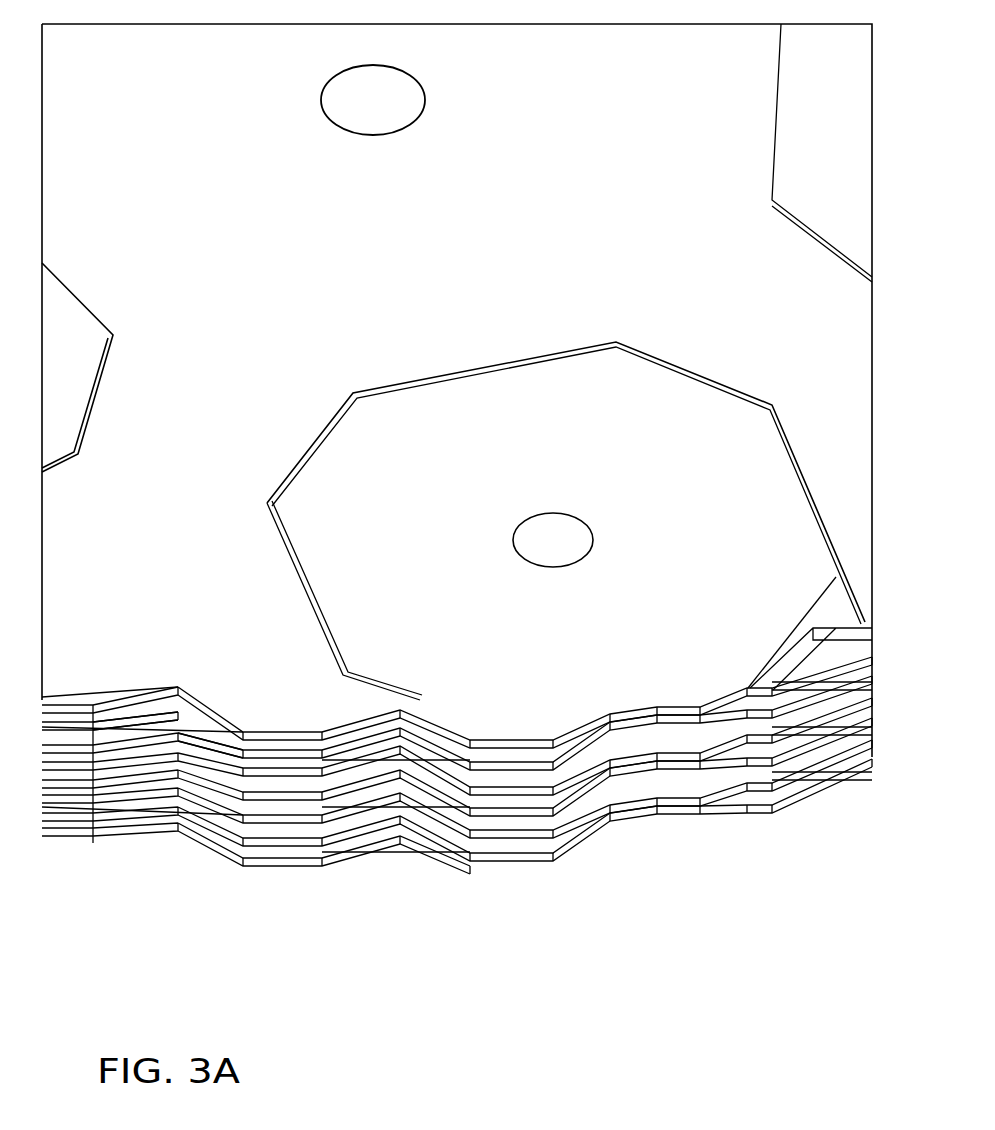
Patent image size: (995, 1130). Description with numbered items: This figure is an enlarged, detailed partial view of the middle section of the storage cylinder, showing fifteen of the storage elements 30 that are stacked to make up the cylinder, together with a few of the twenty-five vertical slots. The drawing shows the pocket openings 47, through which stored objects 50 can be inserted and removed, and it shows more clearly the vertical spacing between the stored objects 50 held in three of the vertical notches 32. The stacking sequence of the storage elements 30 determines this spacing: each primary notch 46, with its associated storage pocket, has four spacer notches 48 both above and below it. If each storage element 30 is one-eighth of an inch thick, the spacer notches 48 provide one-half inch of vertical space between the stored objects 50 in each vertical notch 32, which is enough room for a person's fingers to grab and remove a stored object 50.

The storage element 30 is at (240, 254).
The vertical notch 32 is at (160, 862).
The primary notch 46 is at (197, 757).
The pocket opening 47 is at (152, 755).
The spacer notch 48 is at (682, 716).
The stored object 50 is at (605, 686).